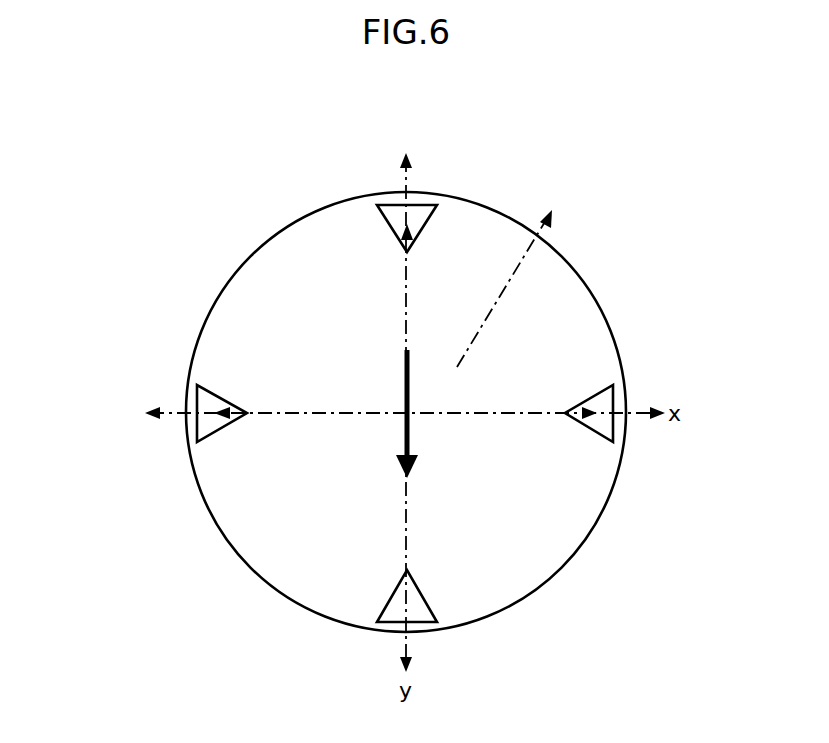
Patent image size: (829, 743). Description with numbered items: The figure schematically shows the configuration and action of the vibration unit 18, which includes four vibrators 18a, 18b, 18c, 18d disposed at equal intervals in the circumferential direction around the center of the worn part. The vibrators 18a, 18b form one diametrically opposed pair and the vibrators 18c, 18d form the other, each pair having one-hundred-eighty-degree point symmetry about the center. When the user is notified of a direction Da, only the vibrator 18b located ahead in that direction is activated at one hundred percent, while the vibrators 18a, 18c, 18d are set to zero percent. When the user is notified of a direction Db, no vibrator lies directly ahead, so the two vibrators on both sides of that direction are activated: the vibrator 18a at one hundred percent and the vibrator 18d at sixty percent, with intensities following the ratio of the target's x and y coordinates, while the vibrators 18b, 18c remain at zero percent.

The vibration unit 18 is at (252, 236).
The vibrator 18a is at (423, 213).
The vibrator 18b is at (395, 613).
The vibrator 18c is at (205, 398).
The vibrator 18d is at (607, 428).
The direction Da is at (407, 438).
The direction Db is at (518, 268).